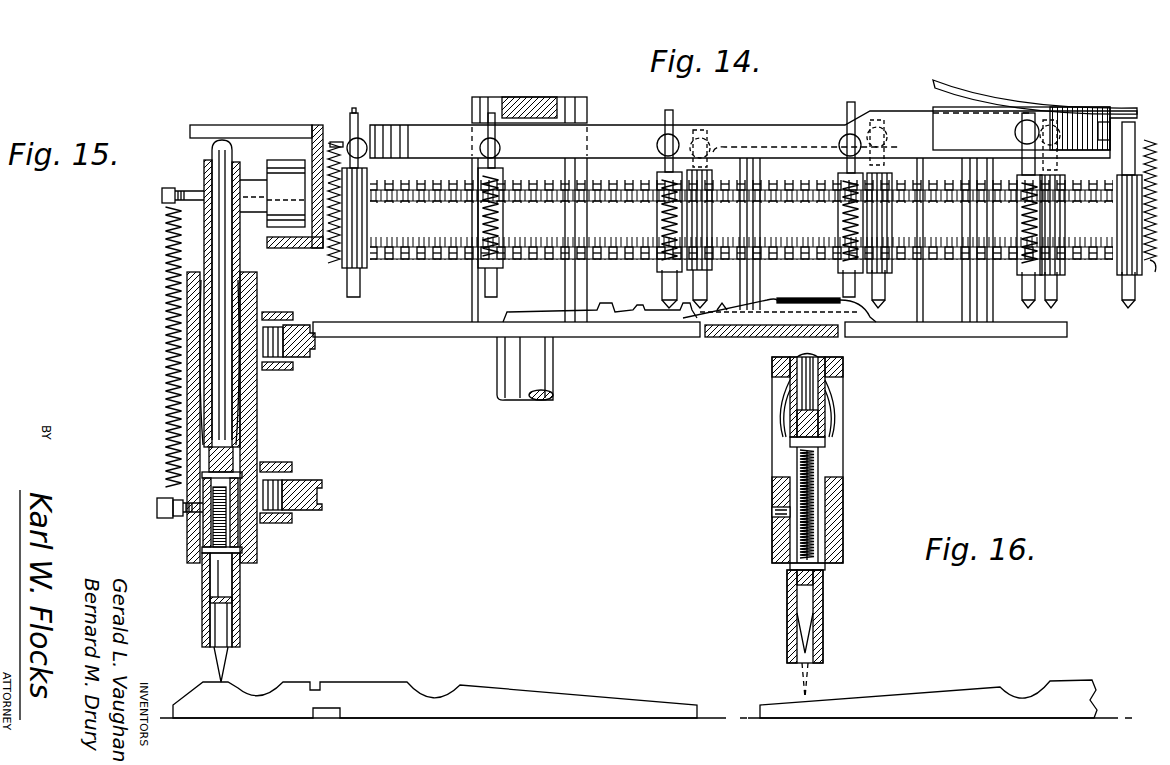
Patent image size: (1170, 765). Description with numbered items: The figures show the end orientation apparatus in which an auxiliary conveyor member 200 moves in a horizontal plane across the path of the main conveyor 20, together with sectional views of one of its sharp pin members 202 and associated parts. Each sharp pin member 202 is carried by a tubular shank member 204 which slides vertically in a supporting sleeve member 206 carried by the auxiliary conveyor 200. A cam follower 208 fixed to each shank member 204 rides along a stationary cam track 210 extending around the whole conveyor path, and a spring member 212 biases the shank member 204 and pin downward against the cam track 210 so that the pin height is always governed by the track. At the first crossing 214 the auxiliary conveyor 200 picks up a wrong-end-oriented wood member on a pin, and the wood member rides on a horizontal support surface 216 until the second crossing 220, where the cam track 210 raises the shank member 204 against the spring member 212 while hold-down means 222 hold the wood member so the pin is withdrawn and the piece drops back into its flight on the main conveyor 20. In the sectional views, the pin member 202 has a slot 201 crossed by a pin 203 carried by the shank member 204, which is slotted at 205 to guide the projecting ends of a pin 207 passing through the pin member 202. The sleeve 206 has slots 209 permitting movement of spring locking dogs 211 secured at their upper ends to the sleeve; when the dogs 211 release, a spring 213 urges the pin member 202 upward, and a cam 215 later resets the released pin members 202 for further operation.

In FIG. 14, the main conveyor 20 is at (733, 335).
In FIG. 14, the auxiliary conveyor member 200 is at (453, 243).
In FIG. 15, the auxiliary conveyor member 200 is at (280, 463).
In FIG. 15, the slot 201 is at (217, 572).
In FIG. 16, the slot 201 is at (810, 520).
In FIG. 14, the sharp pin member 202 is at (667, 307).
In FIG. 15, the sharp pin member 202 is at (218, 173).
In FIG. 16, the sharp pin member 202 is at (807, 627).
In FIG. 15, the pin 203 is at (247, 553).
In FIG. 16, the pin 203 is at (820, 568).
In FIG. 14, the shank member 204 is at (365, 140).
In FIG. 15, the shank member 204 is at (240, 578).
In FIG. 16, the shank member 204 is at (790, 593).
In FIG. 15, the slot 205 is at (203, 495).
In FIG. 16, the slot 205 is at (827, 533).
In FIG. 14, the supporting sleeve member 206 is at (355, 182).
In FIG. 15, the supporting sleeve member 206 is at (193, 328).
In FIG. 16, the supporting sleeve member 206 is at (838, 493).
In FIG. 15, the pin 207 is at (210, 467).
In FIG. 16, the pin 207 is at (790, 443).
In FIG. 14, the cam follower 208 is at (505, 146).
In FIG. 15, the cam follower 208 is at (283, 162).
In FIG. 15, the slot 209 is at (190, 390).
In FIG. 16, the slot 209 is at (837, 427).
In FIG. 14, the stationary cam track 210 is at (775, 132).
In FIG. 15, the stationary cam track 210 is at (290, 248).
In FIG. 15, the spring locking dog 211 is at (203, 433).
In FIG. 16, the spring locking dog 211 is at (800, 412).
In FIG. 14, the spring member 212 is at (345, 160).
In FIG. 15, the spring member 212 is at (170, 282).
In FIG. 15, the spring 213 is at (213, 525).
In FIG. 16, the spring 213 is at (800, 533).
In FIG. 14, the first crossing 214 is at (704, 114).
In FIG. 15, the first crossing 214 is at (153, 236).
In FIG. 14, the cam 215 is at (975, 92).
In FIG. 15, the cam 215 is at (222, 127).
In FIG. 14, the horizontal support surface 216 is at (428, 335).
In FIG. 14, the second crossing 220 is at (857, 94).
In FIG. 14, the hold-down means 222 is at (803, 303).